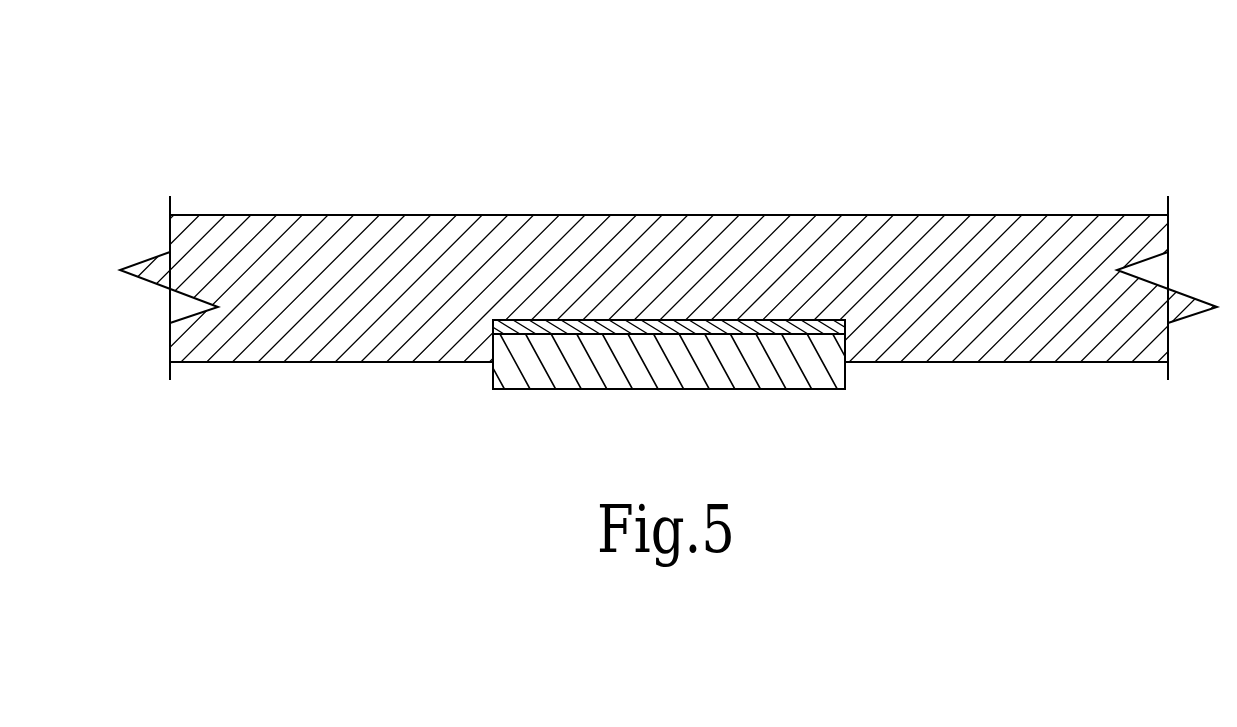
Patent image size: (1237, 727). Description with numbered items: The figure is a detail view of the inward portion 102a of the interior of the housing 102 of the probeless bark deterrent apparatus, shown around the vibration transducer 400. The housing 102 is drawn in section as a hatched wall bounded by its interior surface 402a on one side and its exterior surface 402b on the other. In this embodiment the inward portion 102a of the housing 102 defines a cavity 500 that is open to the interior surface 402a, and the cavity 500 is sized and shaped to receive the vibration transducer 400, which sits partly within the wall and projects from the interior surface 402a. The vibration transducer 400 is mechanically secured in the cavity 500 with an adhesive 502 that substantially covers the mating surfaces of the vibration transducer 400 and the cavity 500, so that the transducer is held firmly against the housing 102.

The housing 102 is at (950, 235).
The inward portion 102a is at (418, 253).
The interior surface 402a is at (997, 363).
The exterior surface 402b is at (1045, 214).
The vibration transducer 400 is at (818, 383).
The cavity 500 is at (647, 318).
The adhesive 502 is at (552, 332).